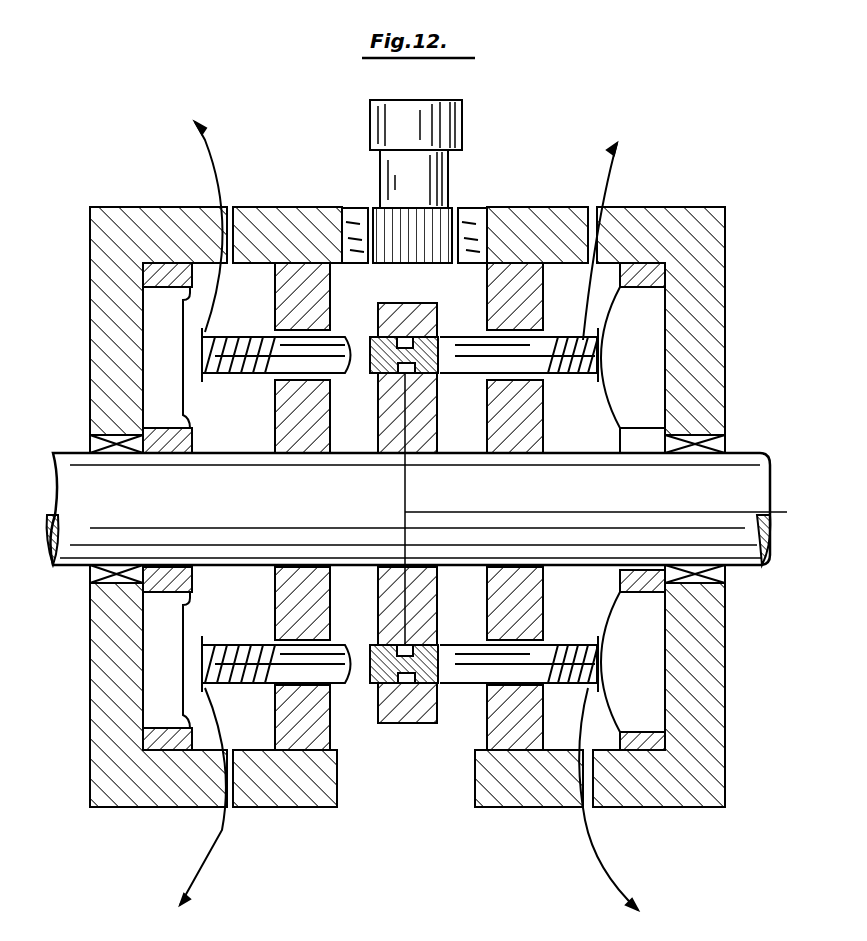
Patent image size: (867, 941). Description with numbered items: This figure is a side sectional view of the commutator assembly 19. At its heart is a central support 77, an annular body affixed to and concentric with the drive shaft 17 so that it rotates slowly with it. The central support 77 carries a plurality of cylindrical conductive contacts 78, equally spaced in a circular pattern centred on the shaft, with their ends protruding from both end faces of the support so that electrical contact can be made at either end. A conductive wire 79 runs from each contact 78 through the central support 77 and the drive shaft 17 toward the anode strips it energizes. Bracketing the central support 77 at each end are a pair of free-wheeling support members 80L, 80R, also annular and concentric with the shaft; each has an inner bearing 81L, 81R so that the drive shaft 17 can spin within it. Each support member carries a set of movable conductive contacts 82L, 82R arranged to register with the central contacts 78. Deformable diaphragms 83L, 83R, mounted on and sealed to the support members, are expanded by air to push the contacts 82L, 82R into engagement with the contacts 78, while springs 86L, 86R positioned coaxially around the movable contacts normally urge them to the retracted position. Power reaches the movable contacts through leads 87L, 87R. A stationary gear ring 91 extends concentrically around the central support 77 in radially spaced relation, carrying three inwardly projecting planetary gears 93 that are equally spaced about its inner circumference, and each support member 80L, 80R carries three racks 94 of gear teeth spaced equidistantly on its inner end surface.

The drive shaft 17 is at (264, 516).
The commutator assembly 19 is at (80, 632).
The central support 77 is at (437, 405).
The conductive contacts 78 is at (437, 337).
The conductive wire 79 is at (460, 510).
The free-wheeling support member 80L is at (300, 225).
The free-wheeling support member 80R is at (530, 225).
The inner bearing 81L is at (90, 440).
The inner bearing 81R is at (727, 440).
The conductive contacts 82L is at (332, 378).
The conductive contacts 82R is at (545, 378).
The deformable diaphragm 83L is at (186, 395).
The deformable diaphragm 83R is at (606, 405).
The spring 86L is at (249, 645).
The spring 86R is at (578, 645).
The lead 87L is at (218, 156).
The lead 87R is at (610, 176).
The gear ring 91 is at (445, 118).
The planetary gears 93 is at (428, 230).
The racks 94 is at (350, 230).